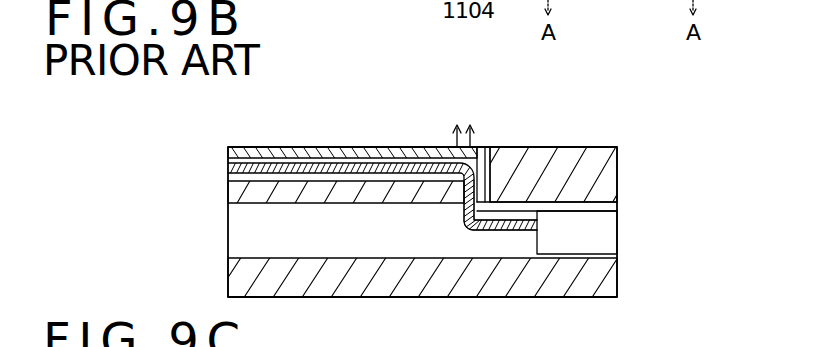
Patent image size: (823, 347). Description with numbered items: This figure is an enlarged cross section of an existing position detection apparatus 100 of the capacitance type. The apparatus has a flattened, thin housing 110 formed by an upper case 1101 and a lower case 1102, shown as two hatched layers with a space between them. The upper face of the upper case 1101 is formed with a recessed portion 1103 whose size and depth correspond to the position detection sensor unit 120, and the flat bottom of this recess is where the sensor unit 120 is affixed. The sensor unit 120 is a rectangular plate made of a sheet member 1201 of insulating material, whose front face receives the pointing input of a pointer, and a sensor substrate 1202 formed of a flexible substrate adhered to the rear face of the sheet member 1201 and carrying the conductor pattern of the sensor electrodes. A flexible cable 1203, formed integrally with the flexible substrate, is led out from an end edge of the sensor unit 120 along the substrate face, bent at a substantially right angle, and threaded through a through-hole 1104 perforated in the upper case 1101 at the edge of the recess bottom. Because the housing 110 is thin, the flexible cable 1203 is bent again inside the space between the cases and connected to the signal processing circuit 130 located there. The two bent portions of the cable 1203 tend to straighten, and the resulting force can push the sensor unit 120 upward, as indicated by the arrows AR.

The position detection apparatus 100 is at (578, 132).
The housing 110 is at (498, 222).
The upper case 1101 is at (618, 165).
The lower case 1102 is at (462, 277).
The recessed portion 1103 is at (482, 162).
The through-hole 1104 is at (487, 162).
The position detection sensor unit 120 is at (317, 171).
The sheet member 1201 is at (247, 148).
The sensor substrate 1202 is at (228, 169).
The flexible cable 1203 is at (485, 232).
The signal processing circuit 130 is at (577, 237).
The arrows AR is at (467, 130).